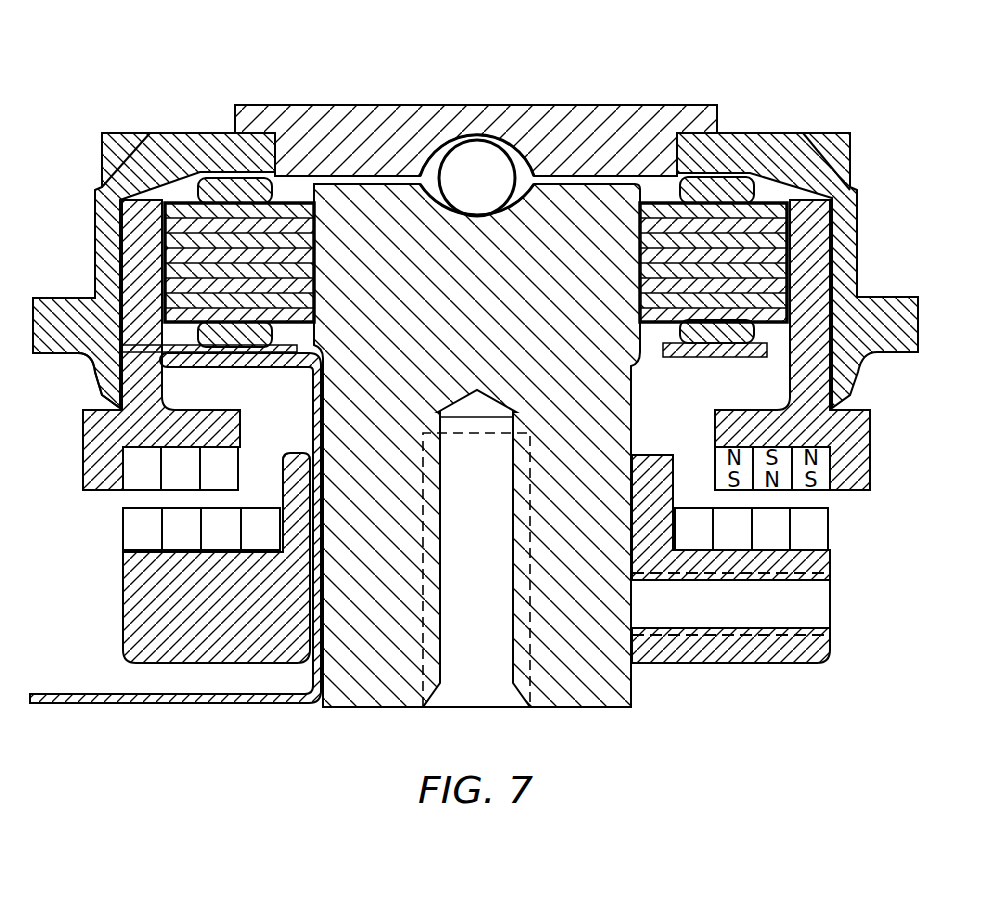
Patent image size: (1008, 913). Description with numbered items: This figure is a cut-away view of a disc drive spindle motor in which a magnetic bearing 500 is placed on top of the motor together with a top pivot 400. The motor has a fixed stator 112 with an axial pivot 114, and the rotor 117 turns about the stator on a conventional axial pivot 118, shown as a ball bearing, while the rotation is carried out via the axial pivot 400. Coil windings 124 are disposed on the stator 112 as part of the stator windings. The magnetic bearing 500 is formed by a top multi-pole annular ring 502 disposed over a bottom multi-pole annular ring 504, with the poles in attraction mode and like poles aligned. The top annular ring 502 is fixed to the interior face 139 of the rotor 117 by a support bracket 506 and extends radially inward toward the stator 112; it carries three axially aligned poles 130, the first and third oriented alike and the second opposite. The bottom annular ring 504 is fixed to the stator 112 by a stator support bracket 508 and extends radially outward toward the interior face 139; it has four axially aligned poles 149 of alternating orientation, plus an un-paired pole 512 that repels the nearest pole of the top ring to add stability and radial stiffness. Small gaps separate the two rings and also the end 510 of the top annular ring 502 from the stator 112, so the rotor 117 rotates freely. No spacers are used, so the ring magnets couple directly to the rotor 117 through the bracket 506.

The stator 112 is at (490, 384).
The axial pivot 114 is at (476, 107).
The rotor 117 is at (154, 236).
The conventional axial pivot 118 is at (456, 130).
The coil windings 124 is at (740, 220).
The axially aligned poles 130 is at (180, 434).
The interior face of the rotor 139 is at (76, 333).
The axially aligned poles 149 is at (771, 608).
The top pivot 400 is at (508, 112).
The magnetic bearing 500 is at (181, 558).
The top multi-pole annular ring 502 is at (104, 487).
The bottom multi-pole annular ring 504 is at (790, 535).
The support bracket 506 is at (133, 345).
The stator support bracket 508 is at (731, 541).
The end of the top annular ring 510 is at (756, 345).
The un-paired pole 512 is at (170, 552).